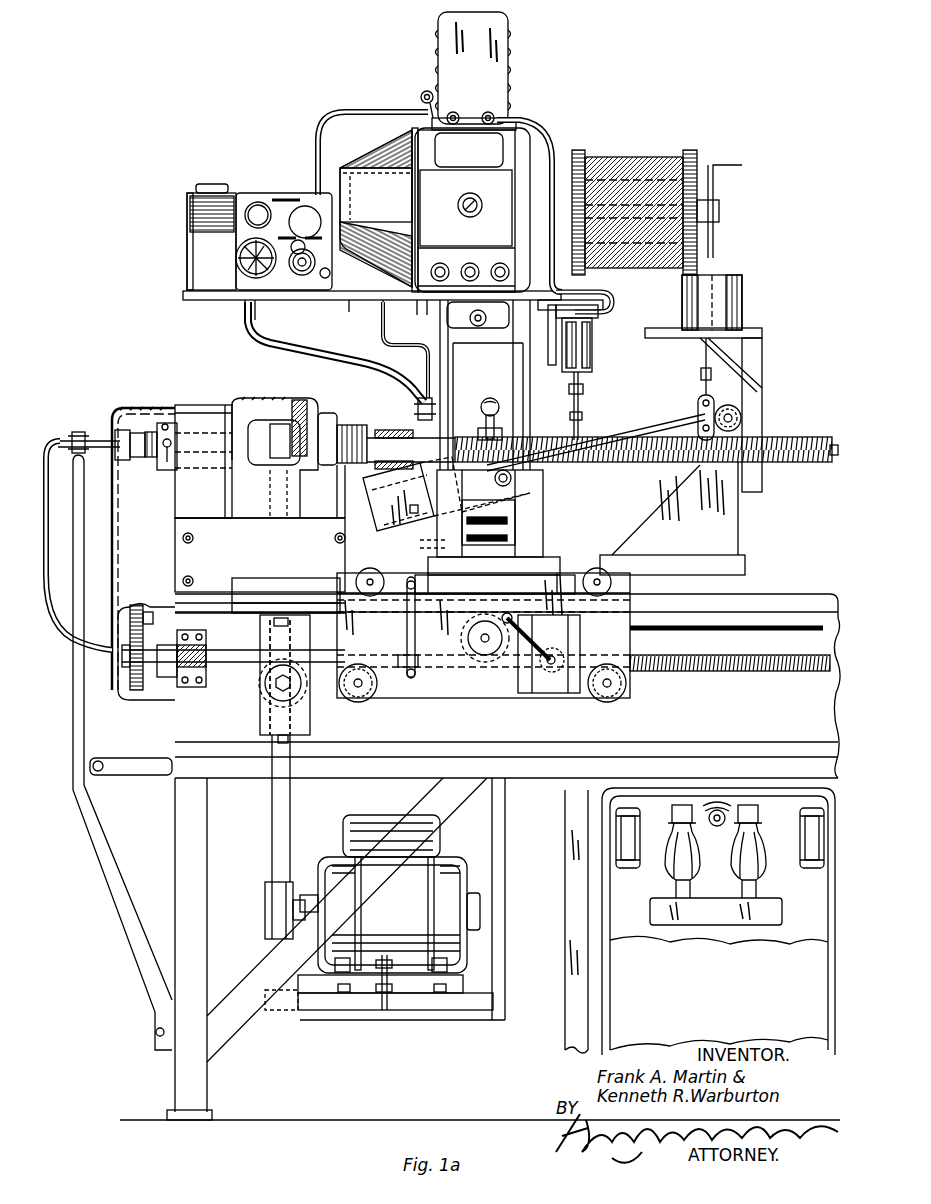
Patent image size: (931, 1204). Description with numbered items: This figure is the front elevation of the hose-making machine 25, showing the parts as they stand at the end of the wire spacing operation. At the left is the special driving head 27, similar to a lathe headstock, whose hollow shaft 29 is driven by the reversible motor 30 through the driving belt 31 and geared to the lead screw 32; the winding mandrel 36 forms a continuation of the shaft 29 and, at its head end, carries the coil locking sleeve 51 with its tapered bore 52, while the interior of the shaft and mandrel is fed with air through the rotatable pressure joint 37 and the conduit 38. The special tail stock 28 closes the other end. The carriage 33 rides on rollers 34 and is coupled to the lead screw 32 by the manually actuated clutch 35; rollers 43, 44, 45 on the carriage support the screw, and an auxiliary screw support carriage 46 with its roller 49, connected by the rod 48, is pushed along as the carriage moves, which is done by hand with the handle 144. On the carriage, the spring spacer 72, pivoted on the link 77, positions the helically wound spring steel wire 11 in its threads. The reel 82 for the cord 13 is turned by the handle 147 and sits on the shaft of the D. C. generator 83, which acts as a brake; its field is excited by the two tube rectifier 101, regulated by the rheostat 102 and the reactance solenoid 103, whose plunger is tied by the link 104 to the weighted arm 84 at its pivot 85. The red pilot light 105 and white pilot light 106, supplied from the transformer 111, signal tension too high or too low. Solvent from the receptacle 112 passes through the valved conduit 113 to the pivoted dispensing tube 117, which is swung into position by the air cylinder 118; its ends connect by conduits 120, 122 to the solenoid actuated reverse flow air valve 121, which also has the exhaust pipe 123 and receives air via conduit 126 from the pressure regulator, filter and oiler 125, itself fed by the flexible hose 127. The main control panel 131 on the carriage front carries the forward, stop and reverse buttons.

The solenoid actuated reverse flow air valve 121 is at (438, 57).
The white pilot light 106 is at (450, 112).
The exhaust pipe 123 is at (421, 94).
The red pilot light 105 is at (486, 112).
The conduit 126 is at (320, 131).
The conduit 122 is at (548, 148).
The elastomeric thermoplastic cord 13 is at (639, 196).
The reel 82 is at (688, 150).
The handle 147 is at (716, 196).
The D. C. generator 83 is at (458, 210).
The manually actuated rheostat 102 is at (470, 194).
The main control panel 131 is at (457, 252).
The pressure regulator, filter and oiler 125 is at (277, 194).
The transformer 111 is at (211, 237).
The receptacle 112 is at (349, 302).
The valved conduit 113 is at (389, 342).
The conduit 120 is at (606, 302).
The reactance solenoid 103 is at (742, 304).
The helically wound spring steel wire 11 is at (766, 470).
The link 104 is at (700, 405).
The pivot 85 is at (745, 414).
The weighted arm 84 is at (648, 429).
The winding mandrel 36 is at (834, 443).
The air cylinder 118 is at (593, 356).
The pivoted dispensing tube 117 is at (580, 384).
The flexible hose 127 is at (300, 353).
The special driving head 27 is at (179, 402).
The rotatable pressure joint 37 is at (75, 432).
The conduit 38 is at (62, 620).
The coil locking sleeve 51 is at (396, 426).
The tapered bore 52 is at (418, 410).
The spring spacer 72 is at (484, 416).
The shaft 29 is at (362, 480).
The link 77 is at (528, 500).
The special tail stock 28 is at (752, 595).
The machine 25 is at (134, 980).
The rod 48 is at (730, 632).
The lead screw 32 is at (708, 673).
The carriage 33 is at (504, 636).
The rollers 34 is at (382, 572).
The roller 43 is at (380, 700).
The roller 45 is at (582, 696).
The roller 44 is at (466, 627).
The handle 144 is at (407, 625).
The manually actuated clutch 35 is at (560, 655).
The screw support carriage 46 is at (231, 660).
The roller 49 is at (262, 690).
The driving belt 31 is at (290, 845).
The reversible motor 30 is at (447, 858).
The two tube rectifier 101 is at (718, 921).